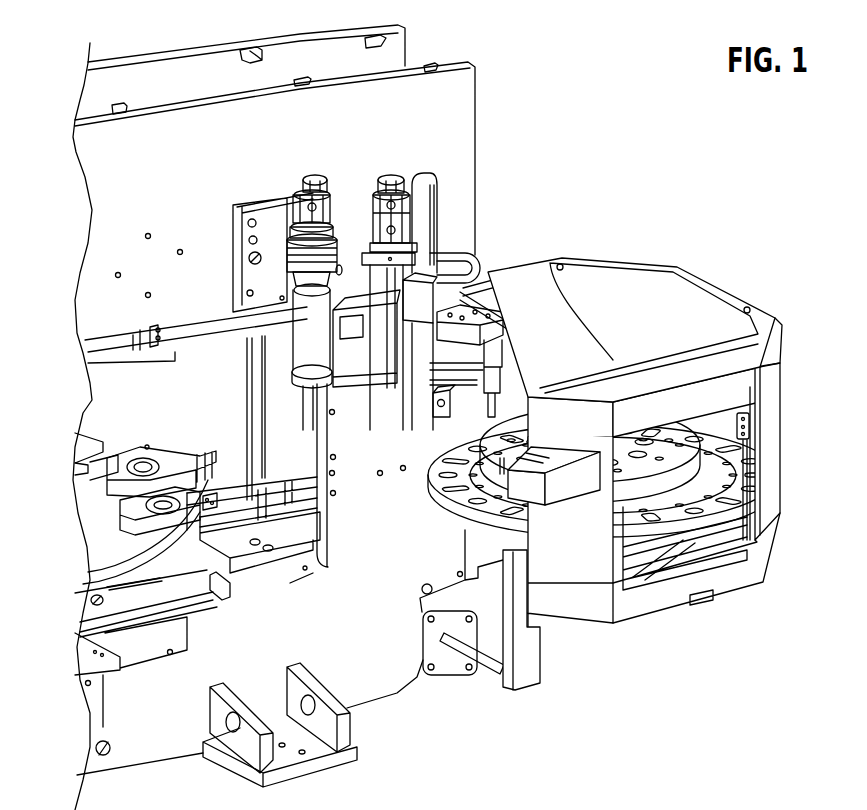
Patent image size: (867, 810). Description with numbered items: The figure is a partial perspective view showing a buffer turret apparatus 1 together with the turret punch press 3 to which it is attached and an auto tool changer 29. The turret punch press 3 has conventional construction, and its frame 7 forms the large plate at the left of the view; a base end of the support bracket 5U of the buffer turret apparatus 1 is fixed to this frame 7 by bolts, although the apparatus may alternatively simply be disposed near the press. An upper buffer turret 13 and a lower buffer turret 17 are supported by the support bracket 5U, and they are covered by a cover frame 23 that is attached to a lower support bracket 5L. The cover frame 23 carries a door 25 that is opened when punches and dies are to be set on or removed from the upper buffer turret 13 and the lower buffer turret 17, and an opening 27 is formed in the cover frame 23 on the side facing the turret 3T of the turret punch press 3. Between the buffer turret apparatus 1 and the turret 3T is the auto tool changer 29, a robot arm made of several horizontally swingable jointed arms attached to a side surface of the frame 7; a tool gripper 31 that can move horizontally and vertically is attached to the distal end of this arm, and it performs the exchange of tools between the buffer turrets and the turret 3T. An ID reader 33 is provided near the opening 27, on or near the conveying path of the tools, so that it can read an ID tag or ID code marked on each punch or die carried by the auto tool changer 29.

The buffer turret apparatus 1 is at (516, 444).
The turret punch press 3 is at (418, 38).
The turret 3T is at (123, 552).
The support bracket 5U is at (513, 350).
The lower support bracket 5L is at (527, 673).
The frame 7 is at (345, 642).
The upper buffer turret 13 is at (481, 428).
The lower buffer turret 17 is at (557, 494).
The cover frame 23 is at (667, 442).
The door 25 is at (713, 287).
The opening 27 is at (548, 357).
The auto tool changer 29 is at (450, 218).
The tool gripper 31 is at (483, 415).
The ID reader 33 is at (573, 484).